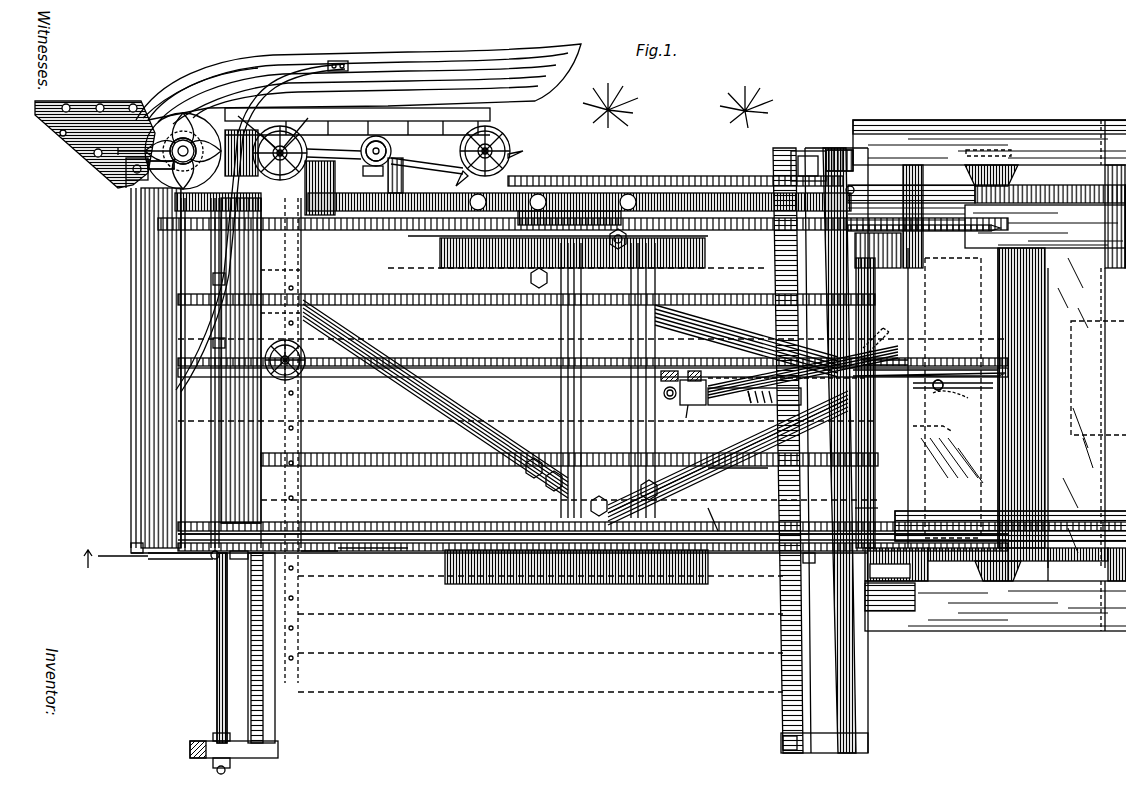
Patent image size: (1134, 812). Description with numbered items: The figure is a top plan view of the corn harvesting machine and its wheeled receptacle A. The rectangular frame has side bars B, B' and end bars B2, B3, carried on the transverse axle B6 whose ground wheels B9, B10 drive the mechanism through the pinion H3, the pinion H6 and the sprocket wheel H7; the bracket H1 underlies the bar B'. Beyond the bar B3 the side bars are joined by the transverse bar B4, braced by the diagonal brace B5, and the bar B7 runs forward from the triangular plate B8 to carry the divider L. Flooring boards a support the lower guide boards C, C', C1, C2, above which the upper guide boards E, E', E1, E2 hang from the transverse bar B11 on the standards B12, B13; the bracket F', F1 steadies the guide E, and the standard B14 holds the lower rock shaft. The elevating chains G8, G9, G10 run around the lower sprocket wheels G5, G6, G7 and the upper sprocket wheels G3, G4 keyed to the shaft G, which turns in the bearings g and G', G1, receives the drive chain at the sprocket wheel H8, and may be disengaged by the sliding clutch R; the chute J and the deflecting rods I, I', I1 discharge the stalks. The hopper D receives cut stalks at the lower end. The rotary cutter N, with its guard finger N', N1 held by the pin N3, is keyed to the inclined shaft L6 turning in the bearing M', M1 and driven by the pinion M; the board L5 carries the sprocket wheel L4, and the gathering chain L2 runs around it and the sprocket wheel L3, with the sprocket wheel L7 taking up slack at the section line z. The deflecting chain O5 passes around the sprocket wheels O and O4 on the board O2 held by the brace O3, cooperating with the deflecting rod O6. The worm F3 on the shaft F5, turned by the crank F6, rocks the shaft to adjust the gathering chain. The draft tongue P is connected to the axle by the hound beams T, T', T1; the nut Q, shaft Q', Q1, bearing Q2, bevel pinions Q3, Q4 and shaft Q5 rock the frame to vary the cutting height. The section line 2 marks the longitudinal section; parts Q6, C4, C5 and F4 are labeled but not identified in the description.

The bar B7 is at (118, 93).
The triangular plate B8 is at (140, 332).
The rotary cutter N is at (105, 172).
The guard finger N' is at (124, 185).
The guard finger N1 is at (161, 165).
The pin N3 is at (130, 174).
The side bar B is at (485, 355).
The divider L is at (430, 50).
The sprocket wheel L3 is at (185, 100).
The sprocket wheel O is at (226, 108).
The pinion M is at (183, 151).
The bearing M' is at (160, 162).
The bearing M1 is at (183, 151).
The board L5 is at (395, 140).
The forwardly inclined shaft L6 is at (285, 118).
The section line z— z is at (357, 119).
The guide board E' is at (349, 270).
The guide board E1 is at (376, 151).
The toothed gathering chain L2 is at (492, 124).
The sprocket wheel L4 is at (495, 140).
The sprocket wheel L7 is at (440, 160).
The sprocket wheel H7 is at (540, 170).
The pinion H3 is at (610, 200).
The pinion H6 is at (565, 205).
The elevating chain G8 is at (730, 222).
The guide board E is at (554, 252).
The ground wheel B9 is at (618, 258).
The guide board C is at (526, 290).
The elevating chain G9 is at (512, 355).
The guide board C' is at (569, 403).
The guide board C1 is at (681, 376).
The side bar B' is at (616, 613).
The ground wheel B10 is at (560, 575).
The trough or hopper D is at (200, 373).
The sprocket wheel G7 is at (213, 255).
The deflecting rod O6 is at (215, 290).
The sprocket wheel G6 is at (205, 335).
The sprocket wheel G5 is at (205, 480).
The bracket F' is at (215, 602).
The bracket F1 is at (222, 648).
The board O2 is at (281, 439).
The brace O3 is at (256, 262).
The toothed deflecting chain O5 is at (281, 303).
The sprocket wheel O4 is at (290, 366).
The flooring board a is at (593, 480).
The diagonal brace B5 is at (462, 385).
The hound beam T is at (746, 341).
The draft tongue P is at (803, 372).
The hound beam T' is at (728, 458).
The hound beam T1 is at (728, 456).
The transverse shaft B6 is at (573, 390).
The tubular nut Q is at (754, 403).
The shaft Q' is at (746, 405).
The shaft Q1 is at (749, 397).
The bearing Q2 is at (688, 397).
The bevel pinion Q3 is at (693, 422).
The bevel pinion Q4 is at (664, 392).
The shaft Q5 is at (748, 368).
The link Q6 is at (887, 337).
The sprocket wheel G3 is at (866, 340).
The bar C4 is at (929, 362).
The link C5 is at (905, 420).
The guide board C2 is at (738, 470).
The elevating chain G10 is at (721, 510).
The transverse bar B11 is at (768, 262).
The end bar B2 is at (848, 150).
The standard B12 is at (824, 743).
The standard B13 is at (800, 143).
The bearing G' is at (851, 198).
The bearing G1 is at (839, 160).
The sprocket wheel H8 is at (986, 186).
The sliding clutch R is at (760, 180).
The deflecting rod I is at (987, 374).
The chute J is at (1017, 356).
The deflecting rod I' is at (953, 385).
The deflecting rod I1 is at (938, 385).
The bracket H1 is at (965, 390).
The wheeled receptacle A is at (1087, 368).
The shaft G is at (843, 403).
The sprocket wheel G4 is at (850, 500).
The bearing g is at (812, 562).
The operating crank F6 is at (995, 589).
The end bar B3 is at (268, 685).
The standard B14 is at (234, 758).
The transverse bar B4 is at (152, 551).
The nut F4 is at (202, 550).
The worm F3 is at (239, 564).
The shaft F5 is at (322, 543).
The guide board E2 is at (365, 540).
The section line 2— 2 is at (104, 557).